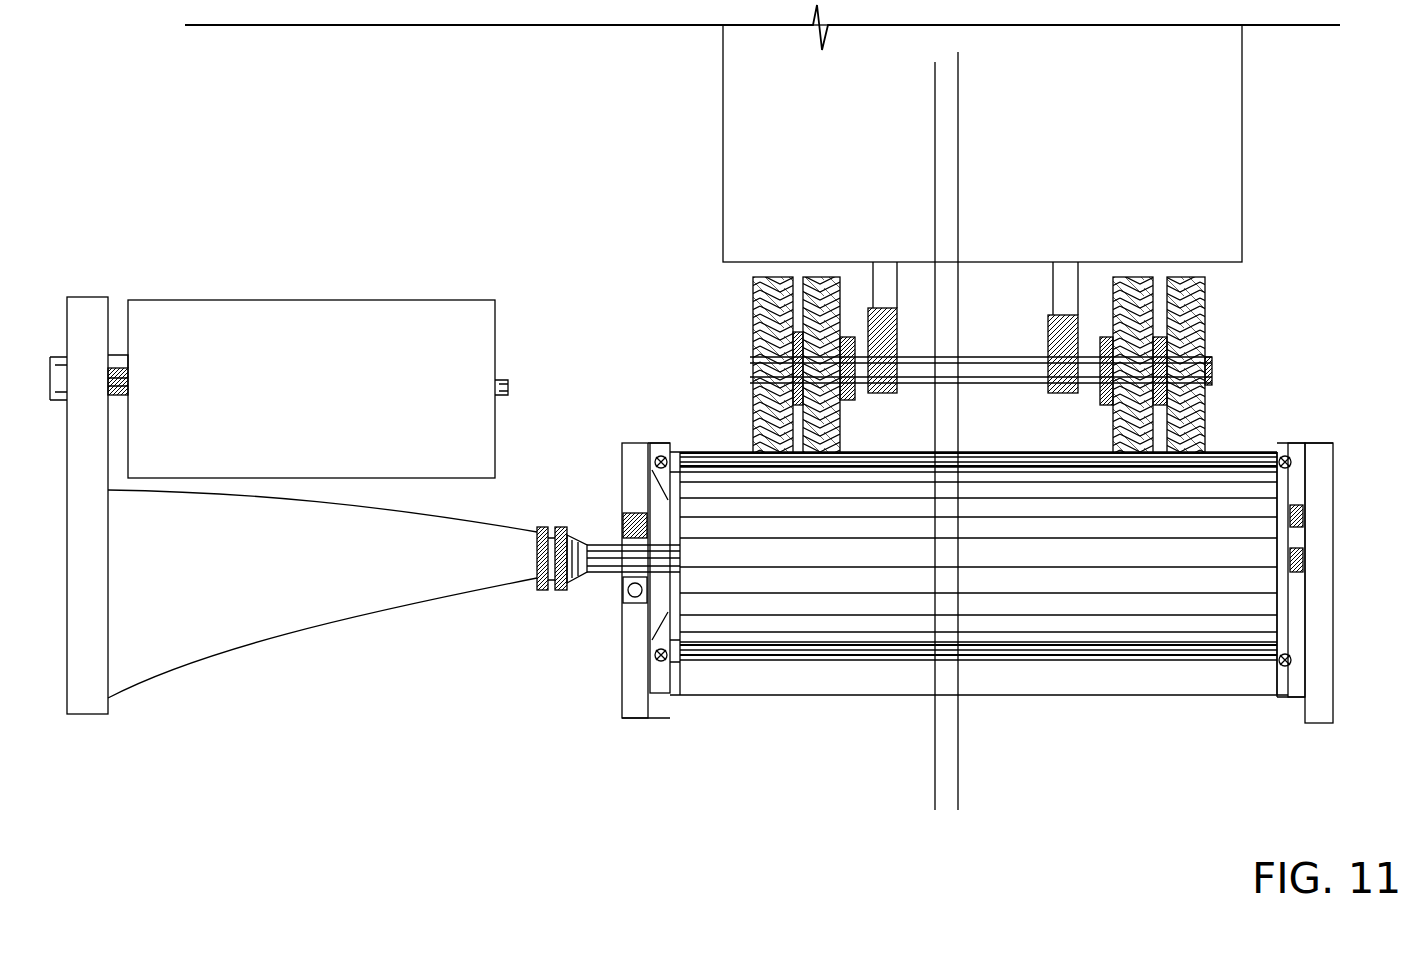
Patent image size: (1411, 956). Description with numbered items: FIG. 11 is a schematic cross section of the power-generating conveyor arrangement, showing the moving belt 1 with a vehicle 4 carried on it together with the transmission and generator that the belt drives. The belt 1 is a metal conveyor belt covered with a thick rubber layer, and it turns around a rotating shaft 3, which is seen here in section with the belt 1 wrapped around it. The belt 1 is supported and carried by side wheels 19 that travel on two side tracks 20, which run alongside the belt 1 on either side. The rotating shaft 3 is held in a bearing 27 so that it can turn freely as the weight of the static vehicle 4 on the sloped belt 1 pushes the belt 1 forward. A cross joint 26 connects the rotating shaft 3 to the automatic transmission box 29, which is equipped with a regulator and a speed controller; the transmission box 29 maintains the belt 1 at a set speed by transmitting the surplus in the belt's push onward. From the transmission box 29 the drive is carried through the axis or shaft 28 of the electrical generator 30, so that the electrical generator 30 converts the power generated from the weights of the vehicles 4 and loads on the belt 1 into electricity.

The moving belt 1 is at (775, 578).
The shaft 3 is at (600, 580).
The vehicle 4 is at (716, 250).
The side wheels 19 is at (676, 668).
The side tracks 20 is at (620, 530).
The cross joint 26 is at (545, 597).
The bearing 27 is at (632, 608).
The axis of the electrical generator 28 is at (118, 382).
The automatic transmission box 29 is at (373, 602).
The electrical generator 30 is at (188, 326).